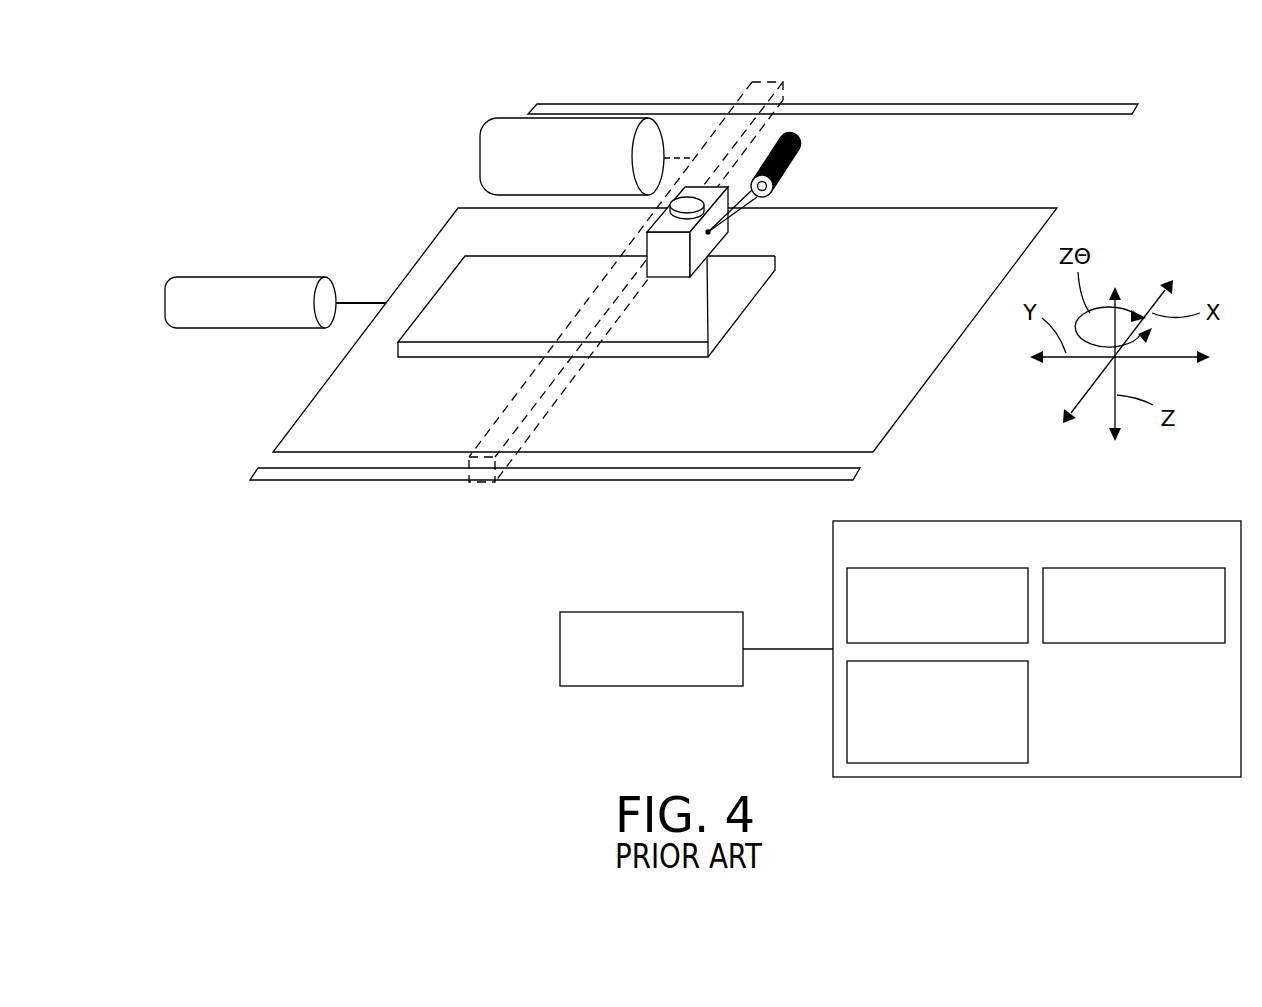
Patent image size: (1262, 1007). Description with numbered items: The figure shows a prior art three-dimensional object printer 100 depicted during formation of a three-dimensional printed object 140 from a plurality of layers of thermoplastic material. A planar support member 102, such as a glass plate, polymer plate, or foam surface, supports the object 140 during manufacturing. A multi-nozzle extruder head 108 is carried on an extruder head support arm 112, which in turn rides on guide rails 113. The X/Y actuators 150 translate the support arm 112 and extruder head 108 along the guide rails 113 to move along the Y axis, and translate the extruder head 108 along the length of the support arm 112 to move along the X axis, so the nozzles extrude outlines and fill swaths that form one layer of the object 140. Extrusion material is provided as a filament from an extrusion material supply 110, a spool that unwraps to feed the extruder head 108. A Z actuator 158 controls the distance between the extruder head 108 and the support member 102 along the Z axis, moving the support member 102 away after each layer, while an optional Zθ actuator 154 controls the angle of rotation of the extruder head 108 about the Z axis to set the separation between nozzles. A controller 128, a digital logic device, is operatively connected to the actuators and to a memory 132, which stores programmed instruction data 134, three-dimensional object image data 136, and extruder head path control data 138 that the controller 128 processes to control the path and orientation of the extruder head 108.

The three-dimensional object printer 100 is at (352, 85).
The support member 102 is at (918, 392).
The extruder head 108 is at (712, 231).
The extrusion material supply 110 is at (797, 142).
The extruder head support arm 112 is at (752, 82).
The guide rails 113 is at (890, 103).
The controller 128 is at (560, 647).
The memory 132 is at (1020, 520).
The programmed instruction data 134 is at (847, 600).
The 3D object image data 136 is at (1133, 643).
The extruder head path control data 138 is at (1028, 708).
The three-dimensional printed object 140 is at (675, 358).
The X/Y actuators 150 is at (480, 157).
The Zθ actuator 154 is at (672, 205).
The Z actuator 158 is at (250, 277).